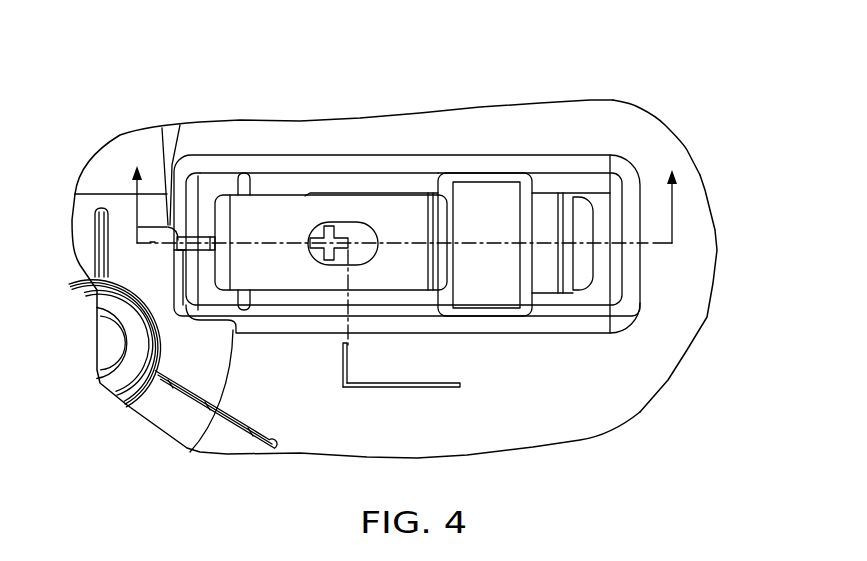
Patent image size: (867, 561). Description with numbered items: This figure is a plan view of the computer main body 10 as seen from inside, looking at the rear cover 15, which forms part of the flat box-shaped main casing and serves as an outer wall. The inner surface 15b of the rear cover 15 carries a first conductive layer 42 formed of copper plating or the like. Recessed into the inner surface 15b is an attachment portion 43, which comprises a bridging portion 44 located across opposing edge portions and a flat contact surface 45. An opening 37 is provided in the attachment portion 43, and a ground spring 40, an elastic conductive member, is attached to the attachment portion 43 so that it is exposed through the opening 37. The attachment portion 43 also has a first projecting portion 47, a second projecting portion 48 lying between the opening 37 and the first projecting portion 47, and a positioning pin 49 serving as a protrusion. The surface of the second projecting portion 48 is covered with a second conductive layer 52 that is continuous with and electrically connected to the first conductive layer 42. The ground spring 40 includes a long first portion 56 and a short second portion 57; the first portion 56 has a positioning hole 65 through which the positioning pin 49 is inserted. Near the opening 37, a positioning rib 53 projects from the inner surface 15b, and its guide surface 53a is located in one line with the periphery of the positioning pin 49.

The computer main body 10 is at (147, 99).
The rear cover 15 is at (593, 107).
The inner surface 15b is at (640, 128).
The first conductive layer 42 is at (698, 187).
The contact surface 45 is at (300, 297).
The attachment portion 43 is at (388, 171).
The ground spring 40 is at (300, 187).
The first portion 56 is at (417, 202).
The positioning hole 65 is at (372, 258).
The positioning pin 49 is at (329, 226).
The first projecting portion 47 is at (208, 236).
The second projecting portion 48 is at (245, 172).
The second conductive layer 52 is at (246, 312).
The bridging portion 44 is at (497, 300).
The opening 37 is at (550, 293).
The second portion 57 is at (590, 273).
The positioning rib 53 is at (424, 390).
The guide surface 53a is at (350, 364).